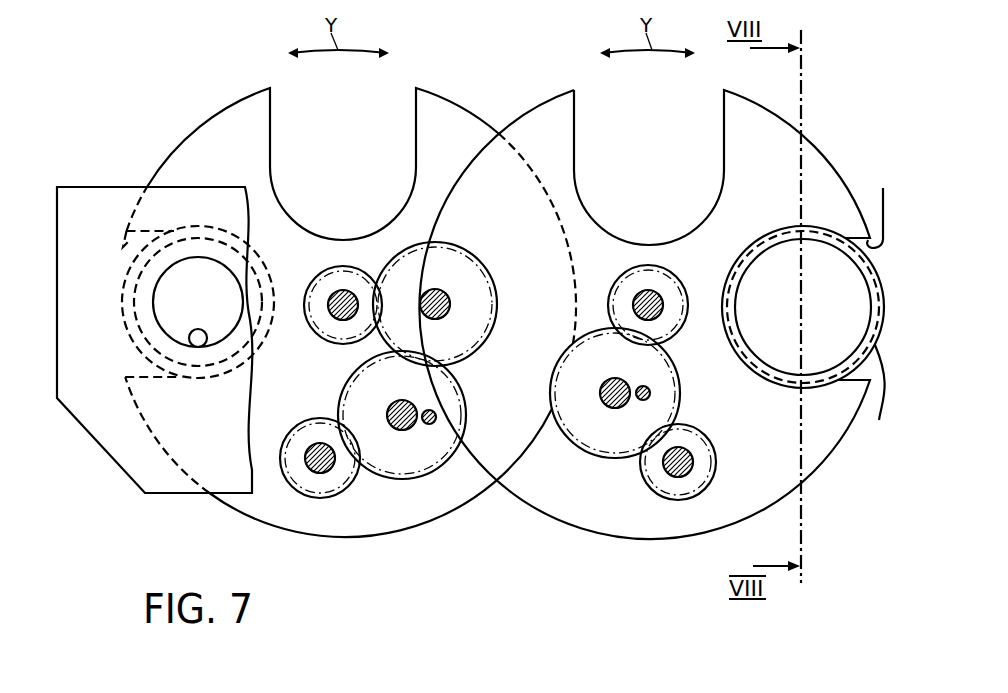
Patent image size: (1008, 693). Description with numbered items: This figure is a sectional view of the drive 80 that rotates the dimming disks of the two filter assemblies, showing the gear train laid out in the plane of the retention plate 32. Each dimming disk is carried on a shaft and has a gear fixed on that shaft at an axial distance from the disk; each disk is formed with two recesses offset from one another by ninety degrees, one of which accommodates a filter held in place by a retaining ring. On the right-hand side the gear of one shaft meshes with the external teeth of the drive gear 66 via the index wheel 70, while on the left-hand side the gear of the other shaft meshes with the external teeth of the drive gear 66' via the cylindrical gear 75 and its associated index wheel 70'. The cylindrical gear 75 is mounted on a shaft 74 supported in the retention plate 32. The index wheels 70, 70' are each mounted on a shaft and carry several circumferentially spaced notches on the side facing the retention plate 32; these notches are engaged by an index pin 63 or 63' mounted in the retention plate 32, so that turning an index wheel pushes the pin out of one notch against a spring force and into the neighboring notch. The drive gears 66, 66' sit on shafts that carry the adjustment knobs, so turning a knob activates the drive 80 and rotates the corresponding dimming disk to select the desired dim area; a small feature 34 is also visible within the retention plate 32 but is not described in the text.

The retention plate 32 is at (128, 440).
The groove 34 is at (207, 347).
The index pin 63 is at (680, 393).
The index pin 63' is at (468, 414).
The drive gear 66 is at (706, 462).
The drive gear 66' is at (331, 498).
The index wheel 70 is at (610, 410).
The index wheel 70' is at (425, 446).
The shaft 74 is at (449, 300).
The cylindrical gear 75 is at (458, 268).
The drive 80 is at (529, 550).